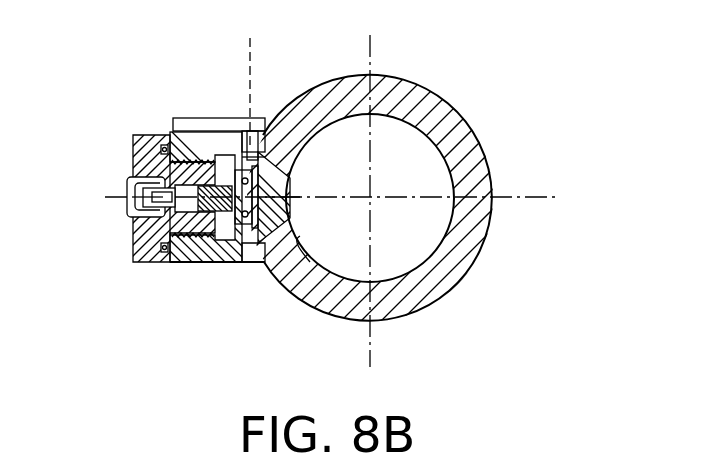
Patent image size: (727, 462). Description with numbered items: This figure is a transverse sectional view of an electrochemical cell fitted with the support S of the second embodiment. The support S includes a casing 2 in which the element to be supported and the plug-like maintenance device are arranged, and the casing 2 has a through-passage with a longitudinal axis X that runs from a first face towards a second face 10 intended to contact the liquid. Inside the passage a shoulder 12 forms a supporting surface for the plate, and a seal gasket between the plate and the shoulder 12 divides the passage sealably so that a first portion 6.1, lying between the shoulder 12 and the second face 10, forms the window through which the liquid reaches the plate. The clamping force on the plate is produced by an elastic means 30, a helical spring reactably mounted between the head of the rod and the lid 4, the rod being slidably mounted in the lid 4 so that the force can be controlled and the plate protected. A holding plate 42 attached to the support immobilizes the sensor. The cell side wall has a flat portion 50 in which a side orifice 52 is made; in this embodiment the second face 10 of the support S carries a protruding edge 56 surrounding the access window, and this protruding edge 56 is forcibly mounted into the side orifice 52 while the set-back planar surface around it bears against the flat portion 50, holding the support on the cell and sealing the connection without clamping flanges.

The support S is at (144, 97).
The casing 2 is at (191, 117).
The lid 4 is at (126, 170).
The second face 10 is at (273, 136).
The shoulder 12 is at (235, 263).
The elastic means 30 is at (165, 261).
The holding plate 42 is at (217, 127).
The flat portion 50 is at (248, 265).
The side orifice 52 is at (303, 237).
The protruding edge 56 is at (267, 265).
The first portion of the passage 6.1 is at (290, 184).
The longitudinal axis X is at (547, 197).